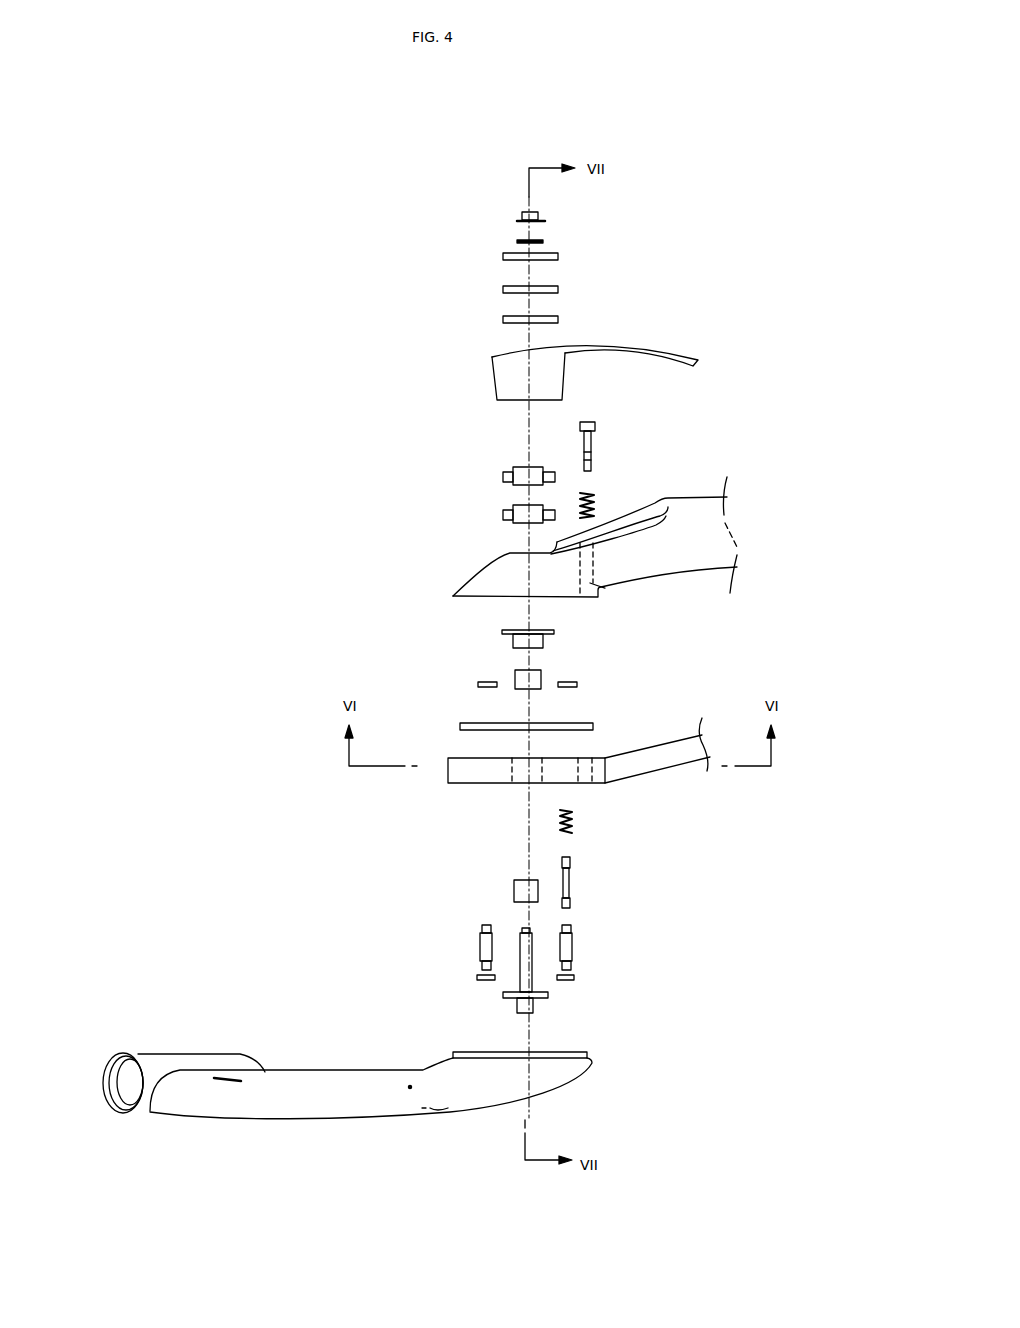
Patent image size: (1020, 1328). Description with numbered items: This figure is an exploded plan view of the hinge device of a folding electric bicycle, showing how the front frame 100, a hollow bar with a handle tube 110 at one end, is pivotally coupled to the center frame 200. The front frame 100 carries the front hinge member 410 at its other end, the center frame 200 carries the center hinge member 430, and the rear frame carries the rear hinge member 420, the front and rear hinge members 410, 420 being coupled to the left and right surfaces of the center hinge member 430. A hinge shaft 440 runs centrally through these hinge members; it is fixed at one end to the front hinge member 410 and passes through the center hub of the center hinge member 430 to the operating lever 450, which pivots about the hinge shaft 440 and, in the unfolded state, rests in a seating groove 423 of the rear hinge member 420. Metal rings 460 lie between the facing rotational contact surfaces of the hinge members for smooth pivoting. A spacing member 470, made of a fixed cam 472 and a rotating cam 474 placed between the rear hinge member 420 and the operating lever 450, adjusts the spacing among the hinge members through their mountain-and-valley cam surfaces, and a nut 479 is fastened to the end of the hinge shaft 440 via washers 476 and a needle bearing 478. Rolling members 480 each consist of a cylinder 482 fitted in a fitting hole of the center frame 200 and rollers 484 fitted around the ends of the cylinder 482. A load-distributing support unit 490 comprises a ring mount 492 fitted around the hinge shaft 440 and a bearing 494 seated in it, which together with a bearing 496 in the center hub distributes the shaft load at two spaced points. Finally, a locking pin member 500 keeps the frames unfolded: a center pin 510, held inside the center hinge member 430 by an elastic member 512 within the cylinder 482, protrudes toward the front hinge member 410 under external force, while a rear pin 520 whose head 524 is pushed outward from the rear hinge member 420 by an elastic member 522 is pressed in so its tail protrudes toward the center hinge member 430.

The front frame 100 is at (347, 1127).
The handle tube 110 is at (142, 1112).
The center frame 200 is at (688, 743).
The front hinge member 410 is at (480, 1097).
The rear hinge member 420 is at (595, 547).
The seating groove 423 is at (690, 497).
The center hinge member 430 is at (567, 767).
The hinge shaft 440 is at (548, 997).
The operating lever 450 is at (670, 351).
The metal rings 460 is at (465, 723).
The spacing member 470 is at (410, 445).
The fixed cam 472 is at (503, 514).
The rotating cam 474 is at (503, 476).
The washers 476 is at (558, 256).
The needle bearing 478 is at (503, 289).
The nut 479 is at (540, 216).
The rolling members 480 is at (657, 928).
The cylinder 482 is at (480, 945).
The rollers 484 is at (580, 685).
The load-distributing support unit 490 is at (410, 607).
The ring mount 492 is at (510, 641).
The bearing 494 is at (515, 672).
The bearing 496 is at (514, 892).
The locking pin member 500 is at (698, 397).
The center pin 510 is at (571, 882).
The elastic member 512 is at (575, 825).
The rear pin 520 is at (591, 450).
The elastic member 522 is at (597, 508).
The head 524 is at (595, 424).